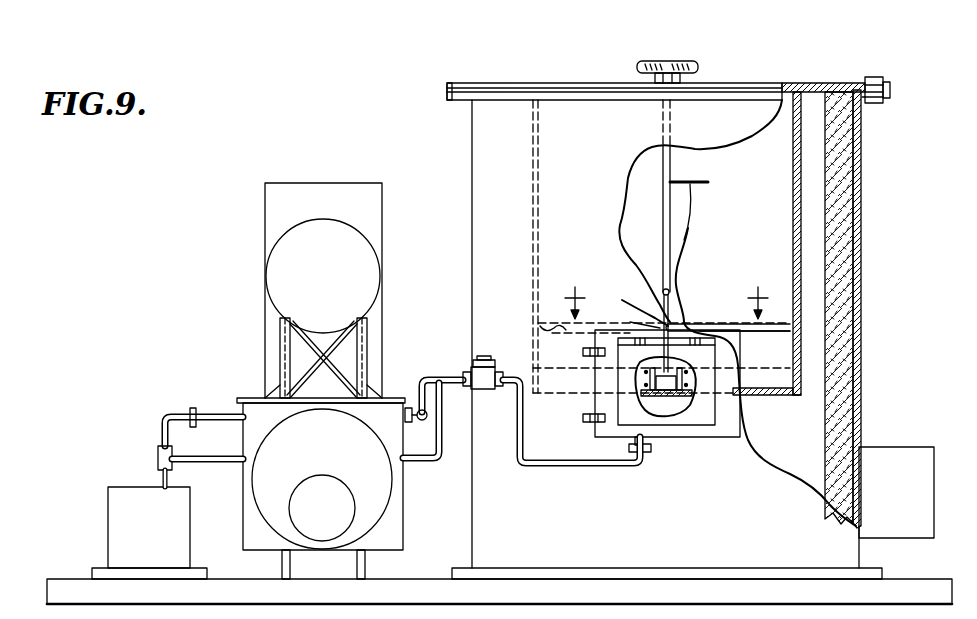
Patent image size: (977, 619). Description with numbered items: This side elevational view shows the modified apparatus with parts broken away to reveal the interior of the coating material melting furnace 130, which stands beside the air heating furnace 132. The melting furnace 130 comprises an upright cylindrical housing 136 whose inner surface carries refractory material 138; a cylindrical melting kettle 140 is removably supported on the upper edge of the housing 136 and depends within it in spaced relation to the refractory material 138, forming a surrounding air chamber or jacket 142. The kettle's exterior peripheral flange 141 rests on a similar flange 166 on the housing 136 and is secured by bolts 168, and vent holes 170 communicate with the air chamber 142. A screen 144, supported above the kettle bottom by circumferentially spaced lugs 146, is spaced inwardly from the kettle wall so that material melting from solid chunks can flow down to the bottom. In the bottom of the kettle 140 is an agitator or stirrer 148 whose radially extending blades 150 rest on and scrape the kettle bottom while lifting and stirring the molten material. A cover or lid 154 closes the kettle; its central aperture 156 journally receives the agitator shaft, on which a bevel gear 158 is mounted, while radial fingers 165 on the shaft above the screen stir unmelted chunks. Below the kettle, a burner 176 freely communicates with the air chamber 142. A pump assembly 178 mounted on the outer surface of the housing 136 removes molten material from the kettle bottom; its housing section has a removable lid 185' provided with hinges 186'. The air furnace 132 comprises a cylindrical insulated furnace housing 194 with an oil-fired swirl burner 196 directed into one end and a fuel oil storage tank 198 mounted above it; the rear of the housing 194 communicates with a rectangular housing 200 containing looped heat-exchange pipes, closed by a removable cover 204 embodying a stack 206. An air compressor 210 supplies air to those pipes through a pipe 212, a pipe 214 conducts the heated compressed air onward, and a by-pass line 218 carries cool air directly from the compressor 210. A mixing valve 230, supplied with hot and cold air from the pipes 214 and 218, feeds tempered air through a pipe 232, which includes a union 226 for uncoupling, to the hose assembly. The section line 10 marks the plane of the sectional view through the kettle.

The section line 10 is at (666, 304).
The coating material melting furnace 130 is at (846, 68).
The air heating furnace 132 is at (377, 161).
The upright cylindrical housing 136 is at (858, 349).
The refractory material 138 is at (857, 408).
The cylindrical melting kettle 140 is at (815, 302).
The exterior peripheral flange 141 is at (887, 86).
The air chamber or jacket 142 is at (851, 251).
The screen 144 is at (696, 324).
The lugs 146 is at (530, 323).
The agitator or stirrer 148 is at (775, 398).
The radially extending blades 150 is at (800, 396).
The cover or lid 154 is at (782, 83).
The central aperture 156 is at (676, 100).
The bevel gear 158 is at (667, 60).
The radial fingers 165 is at (676, 226).
The flange on furnace housing 166 is at (882, 97).
The bolts 168 is at (875, 78).
The vent holes 170 is at (802, 84).
The burner 176 is at (906, 456).
The pump assembly 178 is at (689, 453).
The removable lid 185' is at (745, 336).
The hinges 186' is at (629, 303).
The cylindrical insulated furnace housing 194 is at (259, 490).
The burner 196 is at (338, 504).
The fuel oil storage tank 198 is at (360, 271).
The rectangular housing 200 is at (402, 500).
The removable cover 204 is at (258, 398).
The stack 206 is at (284, 225).
The air compressor 210 is at (118, 515).
The pipe 212 is at (159, 449).
The pipe 214 is at (437, 367).
The by-pass line 218 is at (416, 462).
The union 226 is at (650, 452).
The mixing valve 230 is at (487, 390).
The pipe 232 is at (580, 467).